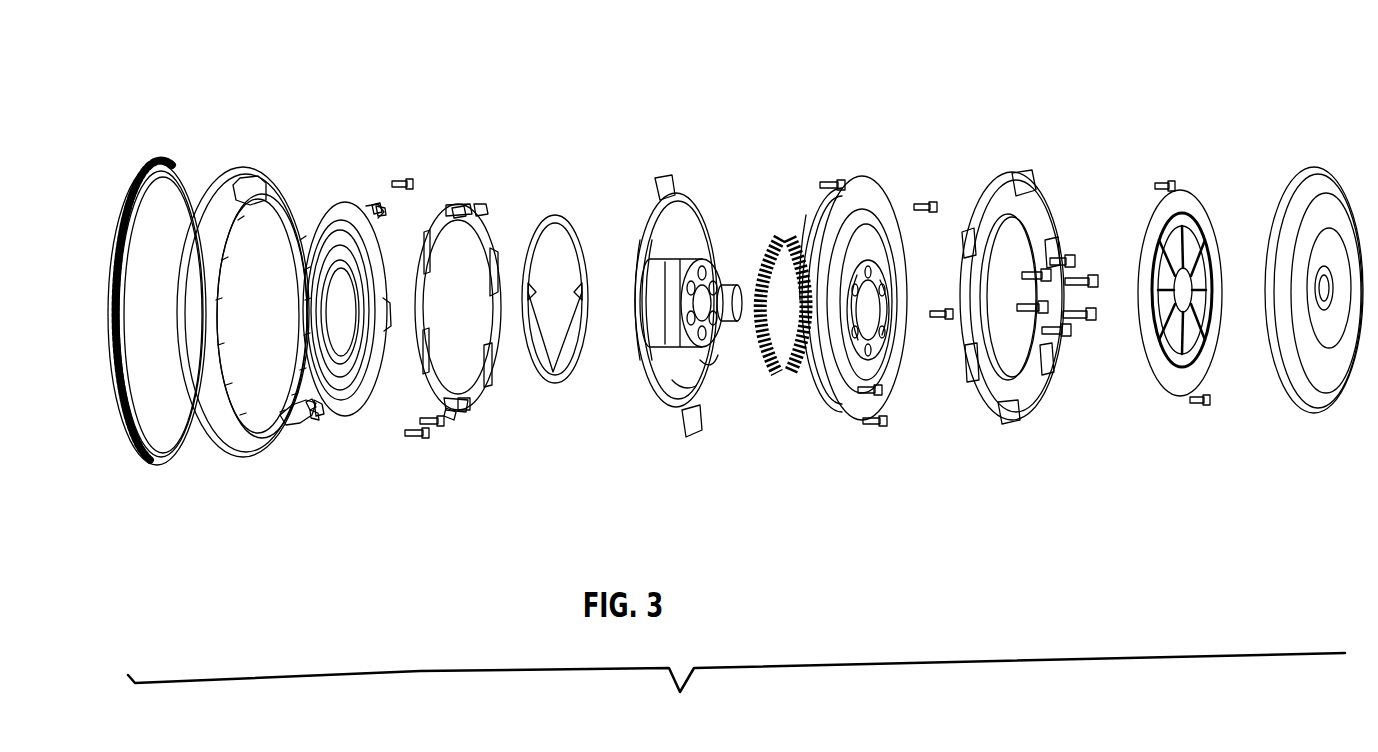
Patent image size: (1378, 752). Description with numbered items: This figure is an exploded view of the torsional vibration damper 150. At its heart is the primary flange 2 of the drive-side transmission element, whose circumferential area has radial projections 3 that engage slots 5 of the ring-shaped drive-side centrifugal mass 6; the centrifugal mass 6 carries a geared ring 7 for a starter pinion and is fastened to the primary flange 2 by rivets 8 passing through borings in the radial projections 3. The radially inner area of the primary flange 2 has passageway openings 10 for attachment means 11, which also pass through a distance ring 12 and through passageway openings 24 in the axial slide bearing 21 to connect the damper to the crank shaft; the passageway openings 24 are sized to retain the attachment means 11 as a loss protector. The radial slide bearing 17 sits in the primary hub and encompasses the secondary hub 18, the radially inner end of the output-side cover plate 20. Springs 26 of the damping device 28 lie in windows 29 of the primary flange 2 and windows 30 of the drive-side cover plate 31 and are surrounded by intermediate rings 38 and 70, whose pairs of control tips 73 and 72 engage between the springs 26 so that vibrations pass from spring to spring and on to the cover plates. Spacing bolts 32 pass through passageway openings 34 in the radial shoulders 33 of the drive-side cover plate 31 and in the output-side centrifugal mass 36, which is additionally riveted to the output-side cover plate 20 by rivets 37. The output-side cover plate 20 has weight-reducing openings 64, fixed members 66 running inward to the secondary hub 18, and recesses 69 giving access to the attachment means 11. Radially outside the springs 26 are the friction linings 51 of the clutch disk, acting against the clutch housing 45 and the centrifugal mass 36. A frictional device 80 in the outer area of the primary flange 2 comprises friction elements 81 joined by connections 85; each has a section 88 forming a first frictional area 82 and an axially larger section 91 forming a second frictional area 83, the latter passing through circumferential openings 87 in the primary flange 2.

The primary flange 2 is at (702, 262).
The radial projections 3 is at (668, 178).
The slot 5 is at (247, 168).
The drive-side centrifugal mass 6 is at (262, 170).
The geared ring 7 is at (155, 167).
The rivets 8 is at (406, 179).
The passageway openings 10 is at (708, 210).
The attachment means 11 is at (1087, 278).
The distance ring 12 is at (640, 265).
The radial slide bearing 17 is at (742, 288).
The secondary hub 18 is at (895, 225).
The output-side cover plate 20 is at (902, 185).
The axial slide bearing 21 is at (683, 390).
The passageway openings 24 is at (712, 370).
The springs 26 is at (770, 375).
The damping device 28 is at (783, 375).
The windows 29 is at (652, 300).
The windows 30 is at (342, 392).
The drive-side cover plate 31 is at (333, 204).
The spacing bolts 32 is at (930, 204).
The radial shoulders 33 is at (377, 205).
The passageway openings 34 is at (386, 216).
The output-side centrifugal mass 36 is at (1040, 223).
The rivets 37 is at (845, 186).
The intermediate ring 38 is at (806, 215).
The clutch housing 45 is at (1310, 400).
The friction linings 51 is at (1190, 205).
The openings 64 is at (893, 320).
The fixed members 66 is at (893, 285).
The recess 69 is at (888, 330).
The intermediate ring 70 is at (578, 214).
The control tips 72 is at (553, 372).
The control tips 73 is at (812, 360).
The frictional device 80 is at (498, 212).
The friction elements 81 is at (490, 292).
The first frictional area 82 is at (459, 208).
The second frictional area 83 is at (463, 403).
The connections 85 is at (497, 322).
The circumferential openings 87 is at (690, 210).
The section 88 is at (480, 205).
The section 91 is at (455, 417).
The torsional vibration damper 150 is at (736, 692).